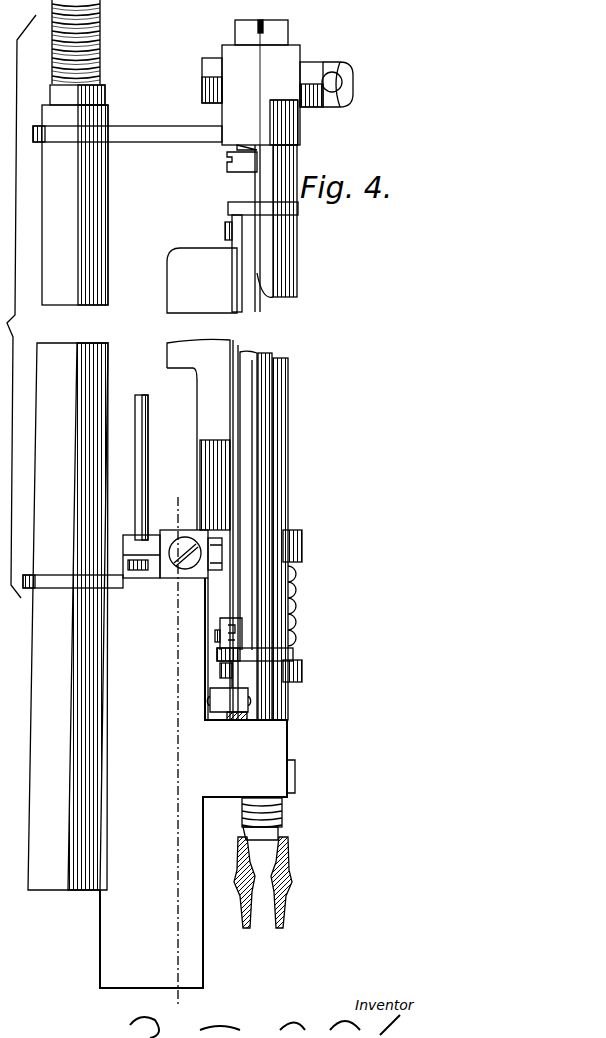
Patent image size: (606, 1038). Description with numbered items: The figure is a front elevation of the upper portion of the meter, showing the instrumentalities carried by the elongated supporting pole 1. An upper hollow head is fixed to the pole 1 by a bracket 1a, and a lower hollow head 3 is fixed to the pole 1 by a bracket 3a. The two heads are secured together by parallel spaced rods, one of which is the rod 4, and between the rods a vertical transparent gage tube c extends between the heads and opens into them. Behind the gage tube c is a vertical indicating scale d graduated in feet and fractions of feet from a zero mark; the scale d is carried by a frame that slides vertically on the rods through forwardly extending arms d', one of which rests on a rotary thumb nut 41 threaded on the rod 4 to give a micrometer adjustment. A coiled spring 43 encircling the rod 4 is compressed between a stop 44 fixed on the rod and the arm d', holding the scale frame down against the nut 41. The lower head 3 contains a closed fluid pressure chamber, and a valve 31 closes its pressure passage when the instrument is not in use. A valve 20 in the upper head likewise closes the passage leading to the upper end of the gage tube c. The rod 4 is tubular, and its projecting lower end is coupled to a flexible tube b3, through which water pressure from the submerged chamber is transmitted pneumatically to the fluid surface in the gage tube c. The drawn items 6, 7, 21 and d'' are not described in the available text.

The supporting pole 1 is at (43, 537).
The bracket 1a is at (130, 130).
The lower hollow head 3 is at (275, 753).
The bracket 3a is at (58, 584).
The rod 4 is at (282, 821).
The clamp 6 is at (243, 326).
The section line 7 is at (177, 498).
The valve 20 is at (308, 70).
The clamping screw 21 is at (293, 127).
The valve 31 is at (128, 572).
The thumb nut 41 is at (303, 676).
The coiled spring 43 is at (297, 597).
The stop 44 is at (303, 548).
The flexible tube b3 is at (275, 897).
The gage tube c is at (248, 182).
The indicating scale d is at (227, 529).
The forwardly extending arm d' is at (263, 668).
The upper cross bar d'' is at (279, 228).